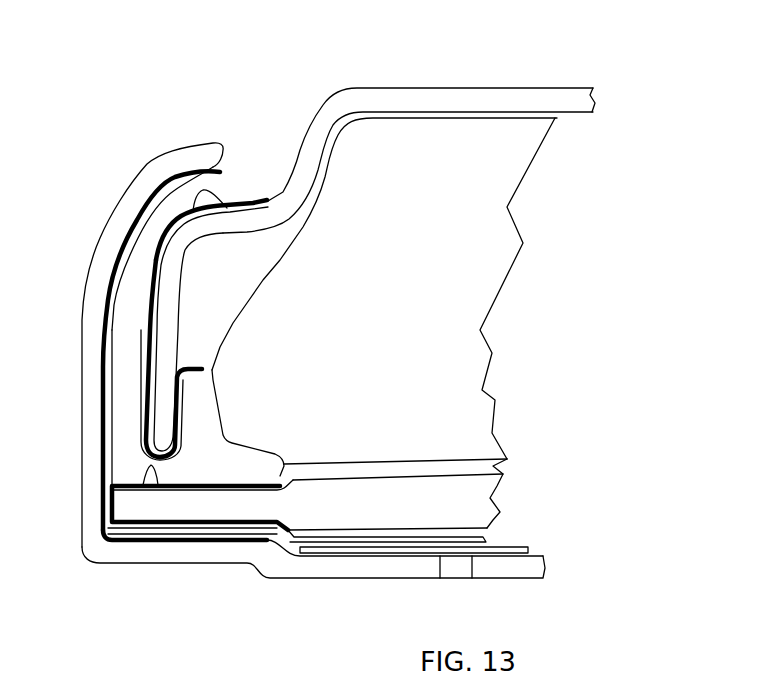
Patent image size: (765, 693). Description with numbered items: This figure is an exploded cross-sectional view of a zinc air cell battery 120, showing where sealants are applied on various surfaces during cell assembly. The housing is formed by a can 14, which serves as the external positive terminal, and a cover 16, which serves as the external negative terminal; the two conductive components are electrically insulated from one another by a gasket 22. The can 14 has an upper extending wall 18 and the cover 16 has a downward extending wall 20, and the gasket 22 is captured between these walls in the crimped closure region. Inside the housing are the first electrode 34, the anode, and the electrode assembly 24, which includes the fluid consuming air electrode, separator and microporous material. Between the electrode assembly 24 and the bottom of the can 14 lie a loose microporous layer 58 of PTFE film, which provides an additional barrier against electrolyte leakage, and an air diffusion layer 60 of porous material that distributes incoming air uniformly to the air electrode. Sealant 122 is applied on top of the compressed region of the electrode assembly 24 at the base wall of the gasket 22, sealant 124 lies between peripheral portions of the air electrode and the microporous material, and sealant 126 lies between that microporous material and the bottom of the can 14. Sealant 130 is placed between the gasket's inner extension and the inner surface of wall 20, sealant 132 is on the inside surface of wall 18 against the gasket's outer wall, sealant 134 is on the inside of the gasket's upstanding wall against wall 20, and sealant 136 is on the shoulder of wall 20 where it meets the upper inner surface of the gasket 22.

The can 14 is at (137, 548).
The cover 16 is at (523, 87).
The upper extending wall 18 is at (120, 216).
The downward extending wall 20 is at (170, 310).
The gasket 22 is at (138, 252).
The electrode assembly 24 is at (482, 482).
The first electrode 34 is at (513, 158).
The microporous layer 58 is at (477, 532).
The air diffusion layer 60 is at (512, 546).
The zinc air cell battery 120 is at (612, 150).
The sealant 122 is at (158, 470).
The sealant 124 is at (180, 522).
The sealant 126 is at (223, 540).
The sealant 130 is at (153, 443).
The sealant 132 is at (122, 348).
The sealant 134 is at (162, 373).
The sealant 136 is at (233, 203).